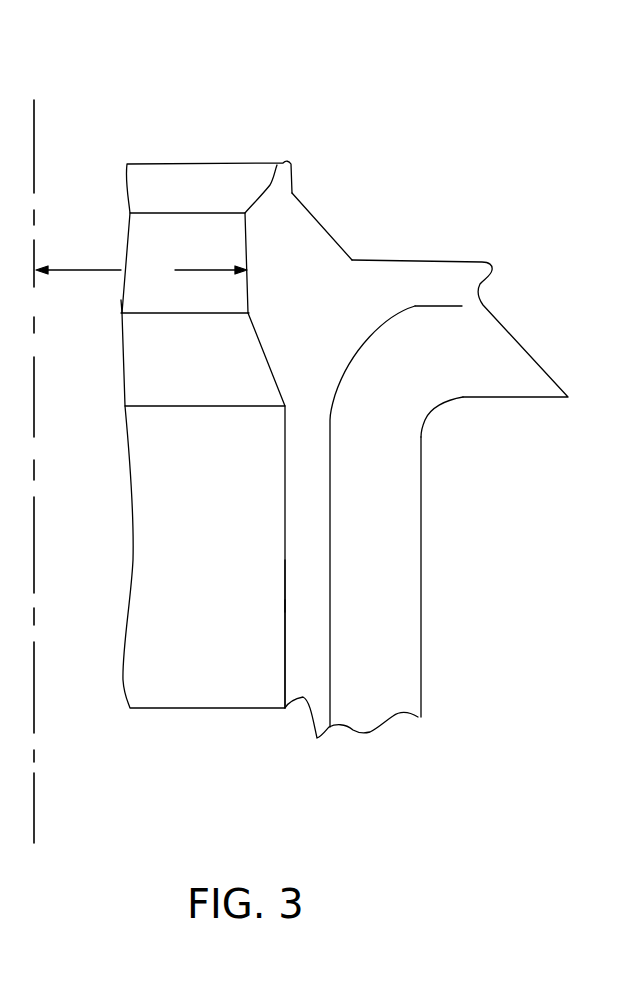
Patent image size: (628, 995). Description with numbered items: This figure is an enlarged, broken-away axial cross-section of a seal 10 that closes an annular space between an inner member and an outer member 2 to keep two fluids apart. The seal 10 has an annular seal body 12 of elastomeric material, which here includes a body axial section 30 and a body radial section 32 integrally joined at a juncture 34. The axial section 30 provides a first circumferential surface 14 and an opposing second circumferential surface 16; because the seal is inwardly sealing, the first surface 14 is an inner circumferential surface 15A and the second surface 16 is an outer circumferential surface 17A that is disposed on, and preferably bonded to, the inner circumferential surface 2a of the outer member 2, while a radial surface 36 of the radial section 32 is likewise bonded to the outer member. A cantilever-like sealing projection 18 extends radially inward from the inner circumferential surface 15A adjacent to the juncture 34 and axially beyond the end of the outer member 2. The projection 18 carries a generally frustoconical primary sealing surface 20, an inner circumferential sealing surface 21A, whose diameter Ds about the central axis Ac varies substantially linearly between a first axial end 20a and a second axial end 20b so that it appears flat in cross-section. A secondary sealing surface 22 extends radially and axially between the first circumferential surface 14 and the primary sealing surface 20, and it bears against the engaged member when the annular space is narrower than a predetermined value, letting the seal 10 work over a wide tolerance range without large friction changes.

The seal 10 is at (419, 133).
The outer member 2 is at (402, 522).
The inner circumferential surface 2a is at (328, 507).
The annular seal body 12 is at (175, 416).
The first circumferential surface 14 is at (274, 655).
The inner circumferential surface 15A is at (283, 610).
The second circumferential surface 16 is at (341, 603).
The outer circumferential surface 17A is at (330, 648).
The sealing projection 18 is at (288, 240).
The primary sealing surface 20 is at (176, 236).
The first axial end 20a is at (207, 212).
The second axial end 20b is at (184, 313).
The inner circumferential sealing surface 21A is at (145, 295).
The secondary sealing surface 22 is at (227, 373).
The body axial section 30 is at (308, 592).
The body radial section 32 is at (455, 270).
The juncture 34 is at (350, 327).
The radial surface 36 is at (462, 306).
The central axis Ac is at (36, 116).
The diameter Ds is at (141, 275).